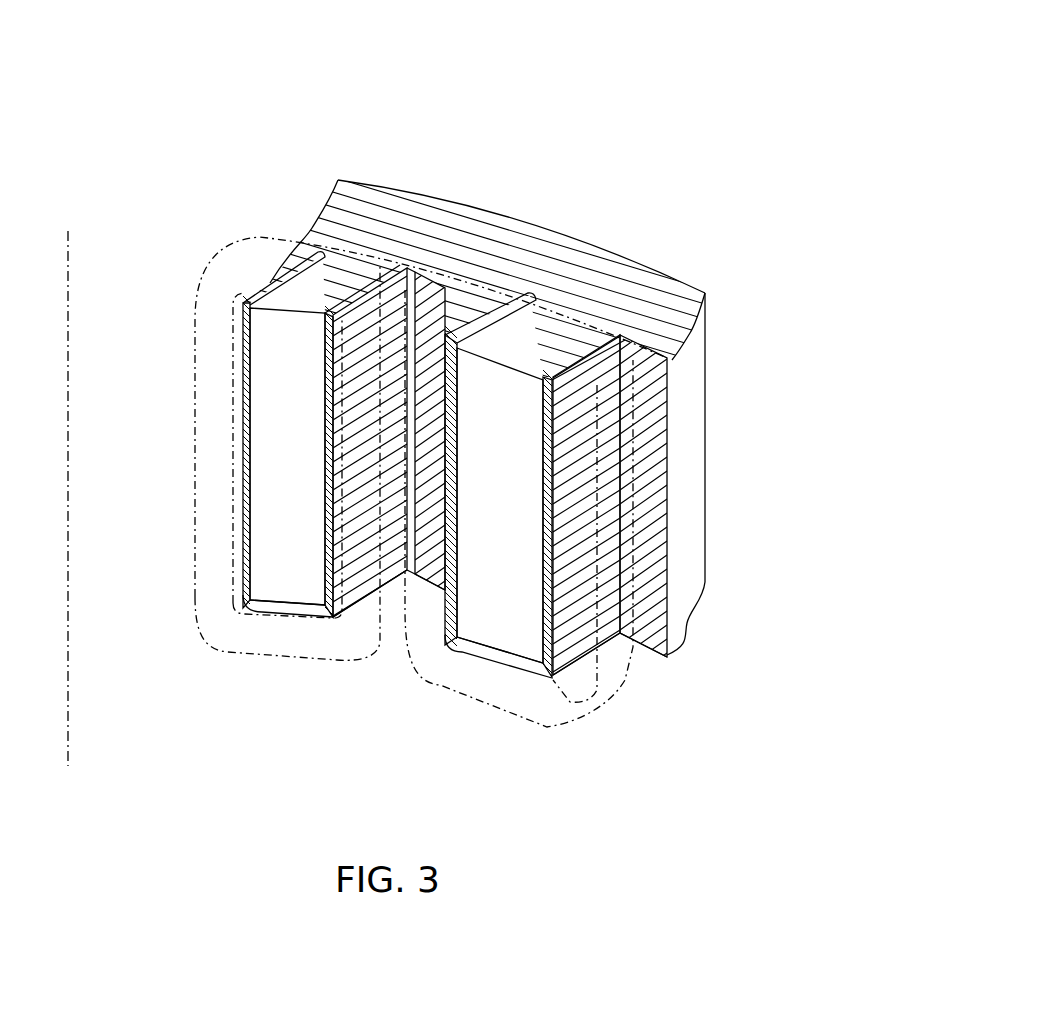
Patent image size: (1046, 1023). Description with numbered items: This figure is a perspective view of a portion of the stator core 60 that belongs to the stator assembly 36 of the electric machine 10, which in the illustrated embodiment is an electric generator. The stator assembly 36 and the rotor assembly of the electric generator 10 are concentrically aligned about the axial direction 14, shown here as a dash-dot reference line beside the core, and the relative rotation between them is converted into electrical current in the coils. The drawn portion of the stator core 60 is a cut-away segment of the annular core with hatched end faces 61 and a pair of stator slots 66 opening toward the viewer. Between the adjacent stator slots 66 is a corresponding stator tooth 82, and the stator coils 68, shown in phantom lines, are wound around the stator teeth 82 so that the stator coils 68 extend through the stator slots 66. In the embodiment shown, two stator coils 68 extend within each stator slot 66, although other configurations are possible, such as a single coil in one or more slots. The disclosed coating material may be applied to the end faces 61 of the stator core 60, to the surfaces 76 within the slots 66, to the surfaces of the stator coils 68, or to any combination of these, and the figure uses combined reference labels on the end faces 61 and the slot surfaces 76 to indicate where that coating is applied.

The electric machine 10 is at (614, 64).
The axial direction 14 is at (70, 640).
The stator assembly 36 is at (494, 399).
The stator core 60 is at (494, 399).
The end faces 61 is at (590, 255).
The stator slots 66 is at (446, 288).
The stator coils 68 is at (260, 230).
The surfaces within the slots 76 is at (447, 372).
The stator tooth 82 is at (278, 512).